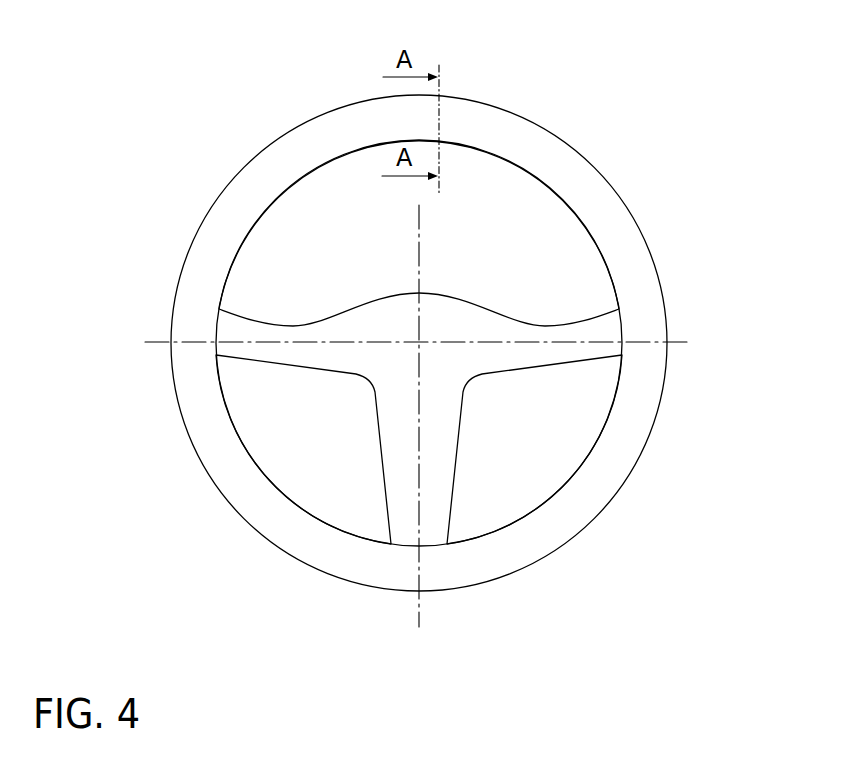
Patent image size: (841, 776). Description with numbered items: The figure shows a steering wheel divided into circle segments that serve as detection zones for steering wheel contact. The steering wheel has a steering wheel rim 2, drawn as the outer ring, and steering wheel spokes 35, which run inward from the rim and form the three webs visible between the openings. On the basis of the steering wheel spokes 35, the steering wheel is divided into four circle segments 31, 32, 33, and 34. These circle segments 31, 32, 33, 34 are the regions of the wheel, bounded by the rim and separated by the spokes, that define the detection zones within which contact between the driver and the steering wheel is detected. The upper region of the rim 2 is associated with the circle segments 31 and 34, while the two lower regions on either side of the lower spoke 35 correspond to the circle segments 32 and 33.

The steering wheel rim 2 is at (501, 130).
The circle segment 31 is at (523, 212).
The circle segment 32 is at (556, 451).
The circle segment 33 is at (283, 451).
The circle segment 34 is at (312, 213).
The steering wheel spokes 35 is at (278, 339).